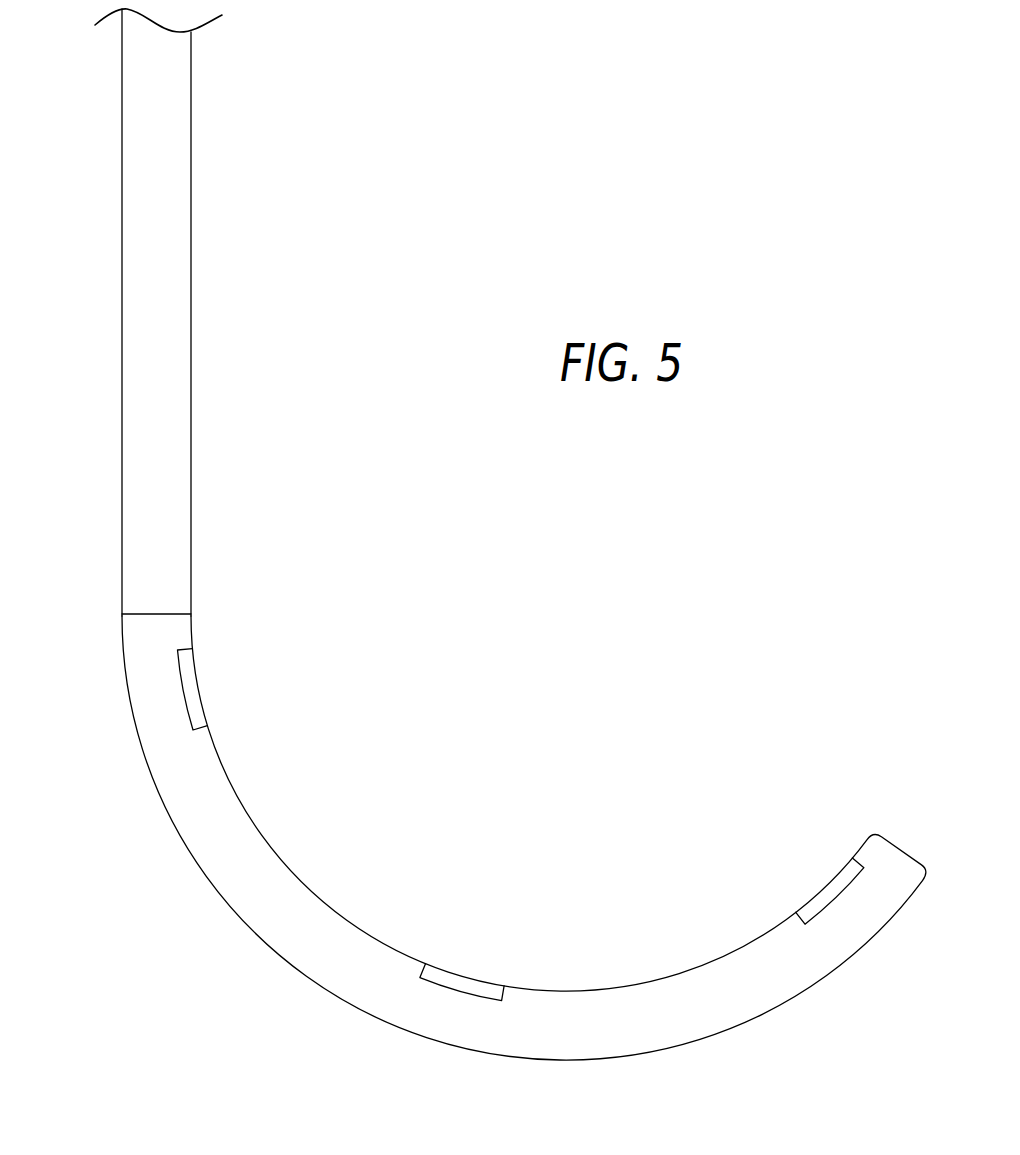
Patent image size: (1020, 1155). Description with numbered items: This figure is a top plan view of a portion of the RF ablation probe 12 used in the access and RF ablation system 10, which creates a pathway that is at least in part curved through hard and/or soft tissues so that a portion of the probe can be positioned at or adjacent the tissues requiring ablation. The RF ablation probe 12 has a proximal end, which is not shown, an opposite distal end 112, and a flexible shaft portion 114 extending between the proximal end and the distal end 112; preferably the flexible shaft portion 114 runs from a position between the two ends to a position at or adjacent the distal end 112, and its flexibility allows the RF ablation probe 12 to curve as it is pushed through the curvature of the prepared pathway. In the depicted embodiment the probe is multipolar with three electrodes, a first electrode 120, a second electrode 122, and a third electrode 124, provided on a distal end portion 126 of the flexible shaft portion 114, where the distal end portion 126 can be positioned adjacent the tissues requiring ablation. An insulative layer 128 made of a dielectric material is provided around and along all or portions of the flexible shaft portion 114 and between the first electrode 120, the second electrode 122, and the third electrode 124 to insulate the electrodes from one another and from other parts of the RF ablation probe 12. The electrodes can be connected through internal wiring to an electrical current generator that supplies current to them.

The access and RF ablation system 10 is at (372, 280).
The RF ablation probe 12 is at (108, 350).
The distal end 112 is at (912, 843).
The flexible shaft portion 114 is at (573, 993).
The first electrode 120 is at (193, 690).
The second electrode 122 is at (450, 980).
The third electrode 124 is at (820, 905).
The distal end portion 126 is at (695, 958).
The insulative layer 128 is at (268, 873).